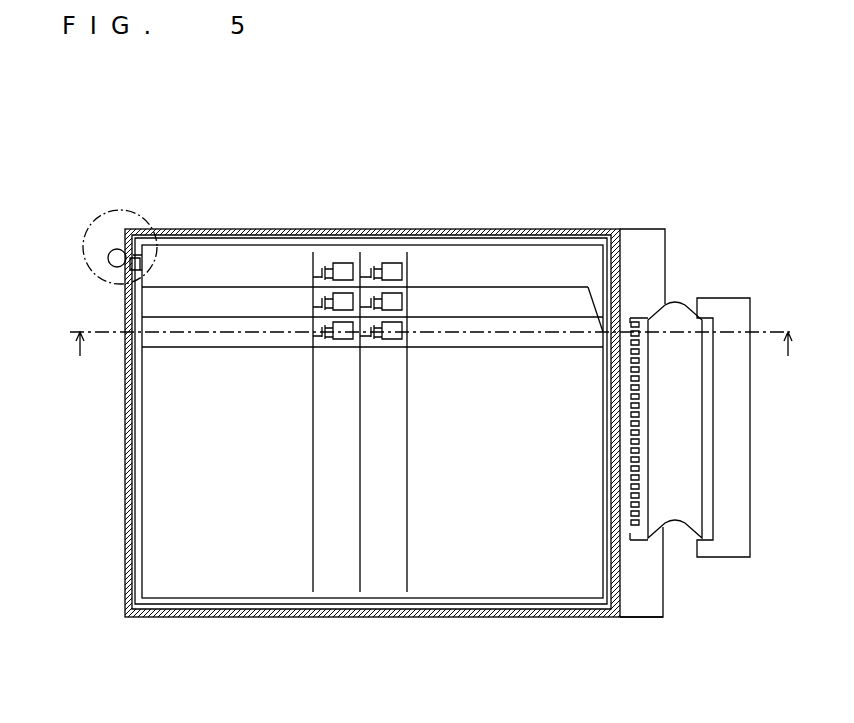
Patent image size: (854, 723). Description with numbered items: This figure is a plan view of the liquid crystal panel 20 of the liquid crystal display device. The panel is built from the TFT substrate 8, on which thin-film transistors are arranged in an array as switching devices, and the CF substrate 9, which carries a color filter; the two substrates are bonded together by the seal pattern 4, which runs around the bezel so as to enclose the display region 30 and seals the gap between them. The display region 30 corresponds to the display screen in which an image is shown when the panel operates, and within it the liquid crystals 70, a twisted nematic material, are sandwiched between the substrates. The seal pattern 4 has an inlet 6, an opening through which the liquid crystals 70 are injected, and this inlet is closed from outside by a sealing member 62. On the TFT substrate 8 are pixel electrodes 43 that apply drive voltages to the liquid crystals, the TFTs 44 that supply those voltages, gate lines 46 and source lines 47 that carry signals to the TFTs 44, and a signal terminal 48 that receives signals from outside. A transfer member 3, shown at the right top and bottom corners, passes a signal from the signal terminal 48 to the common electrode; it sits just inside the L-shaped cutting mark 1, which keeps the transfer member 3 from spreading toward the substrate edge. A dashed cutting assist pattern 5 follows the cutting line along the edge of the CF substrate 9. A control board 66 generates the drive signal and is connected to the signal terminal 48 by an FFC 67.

The liquid crystal panel 20 is at (124, 108).
The cutting mark 1 is at (123, 603).
The transfer member 3 is at (613, 229).
The seal pattern 4 is at (183, 229).
The cutting assist pattern 5 is at (123, 530).
The inlet 6 is at (130, 268).
The TFT substrate 8 is at (622, 556).
The CF substrate 9 is at (666, 582).
The display region 30 is at (178, 582).
The pixel electrode 43 is at (390, 262).
The TFT 44 is at (318, 262).
The gate line 46 is at (359, 563).
The source line 47 is at (232, 287).
The signal terminal 48 is at (640, 330).
The sealing member 62 is at (108, 256).
The control board 66 is at (735, 310).
The FFC 67 is at (676, 310).
The liquid crystals 70 is at (432, 578).